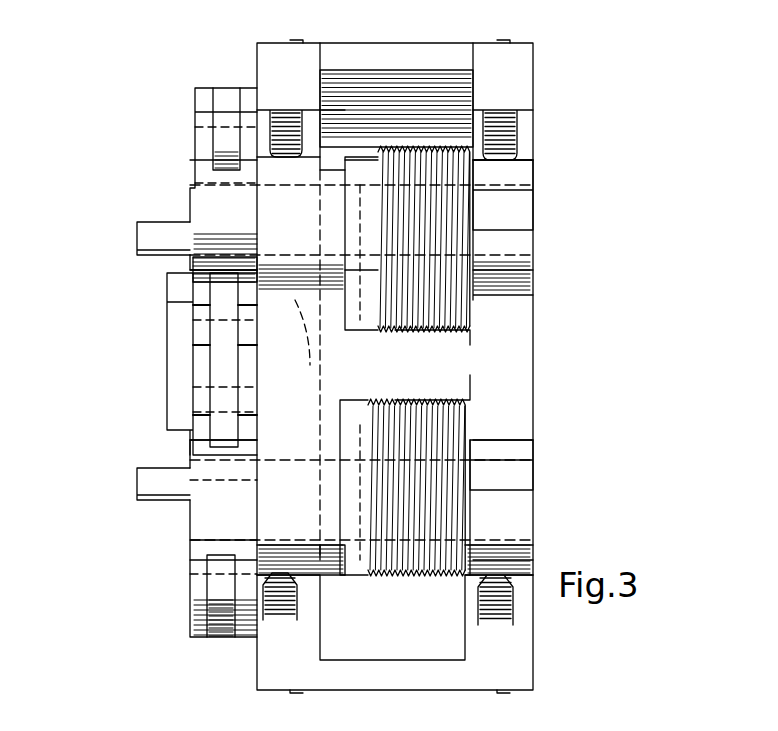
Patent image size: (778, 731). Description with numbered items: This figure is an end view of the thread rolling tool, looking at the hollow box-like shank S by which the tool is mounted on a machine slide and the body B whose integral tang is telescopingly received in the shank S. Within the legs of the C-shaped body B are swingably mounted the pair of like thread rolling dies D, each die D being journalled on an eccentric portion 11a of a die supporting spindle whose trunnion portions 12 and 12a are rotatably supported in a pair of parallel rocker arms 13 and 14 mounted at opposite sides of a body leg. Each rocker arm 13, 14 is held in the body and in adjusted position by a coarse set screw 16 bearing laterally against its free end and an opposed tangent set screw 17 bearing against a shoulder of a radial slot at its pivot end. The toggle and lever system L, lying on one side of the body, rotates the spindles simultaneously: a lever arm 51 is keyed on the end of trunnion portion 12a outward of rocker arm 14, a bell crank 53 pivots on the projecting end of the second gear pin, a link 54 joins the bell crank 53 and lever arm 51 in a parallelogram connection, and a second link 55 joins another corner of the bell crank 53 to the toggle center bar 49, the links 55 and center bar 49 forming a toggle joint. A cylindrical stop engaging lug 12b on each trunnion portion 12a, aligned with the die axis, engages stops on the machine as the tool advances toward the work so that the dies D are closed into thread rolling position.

The body B is at (370, 695).
The tangent set screw 17 is at (295, 40).
The coarse set screw 16 is at (282, 118).
The rocker arm 14 is at (305, 292).
The eccentric portion 11a is at (365, 340).
The trunnion portion 12 is at (520, 276).
The trunnion portion 12a is at (310, 352).
The rocker arm 13 is at (520, 182).
The stop engaging lug 12b is at (150, 222).
The lever arm 51 is at (195, 163).
The link 54 is at (225, 88).
The bell crank 53 is at (195, 88).
The second link 55 is at (220, 292).
The toggle center bar 49 is at (200, 355).
The shank S is at (152, 334).
The toggle and lever system L is at (194, 396).
The thread rolling die D is at (488, 332).